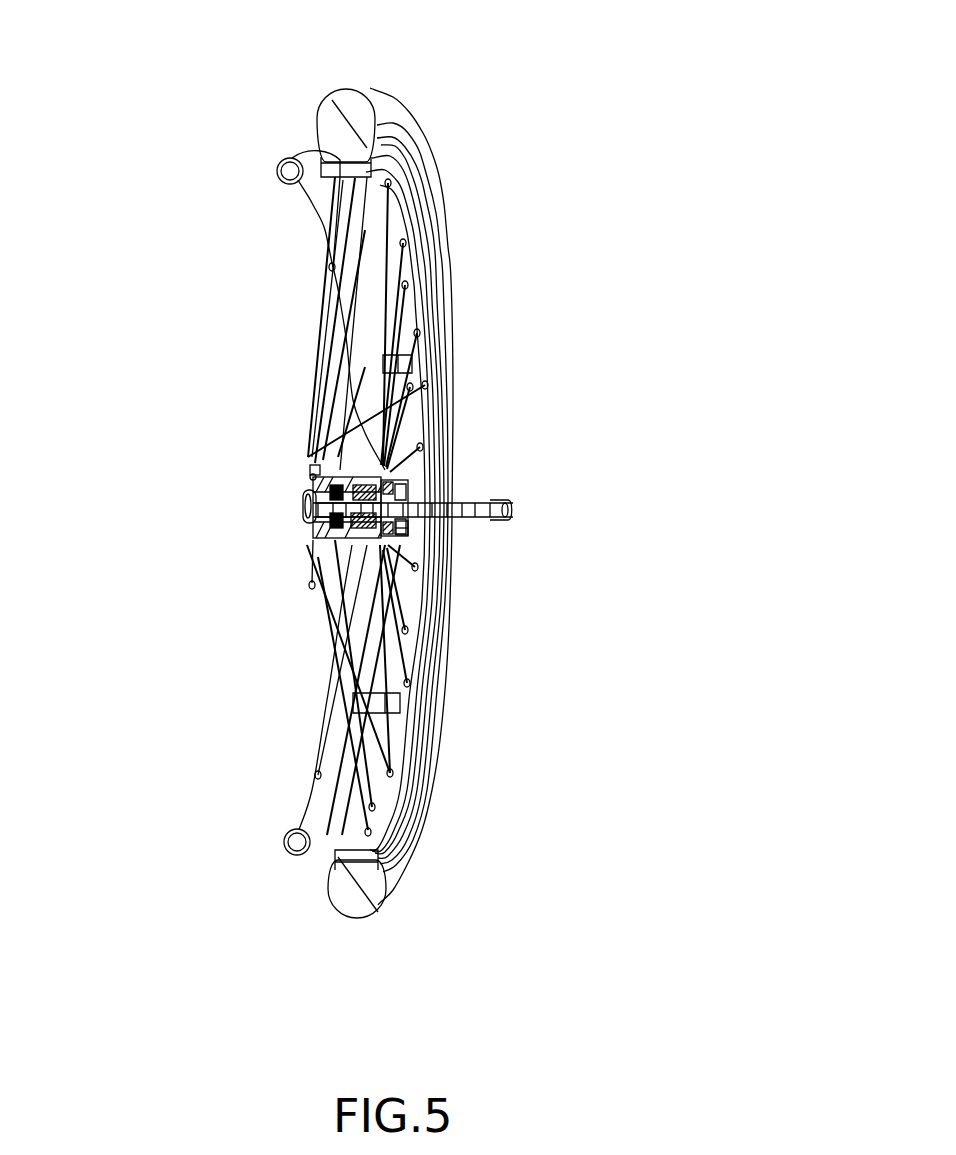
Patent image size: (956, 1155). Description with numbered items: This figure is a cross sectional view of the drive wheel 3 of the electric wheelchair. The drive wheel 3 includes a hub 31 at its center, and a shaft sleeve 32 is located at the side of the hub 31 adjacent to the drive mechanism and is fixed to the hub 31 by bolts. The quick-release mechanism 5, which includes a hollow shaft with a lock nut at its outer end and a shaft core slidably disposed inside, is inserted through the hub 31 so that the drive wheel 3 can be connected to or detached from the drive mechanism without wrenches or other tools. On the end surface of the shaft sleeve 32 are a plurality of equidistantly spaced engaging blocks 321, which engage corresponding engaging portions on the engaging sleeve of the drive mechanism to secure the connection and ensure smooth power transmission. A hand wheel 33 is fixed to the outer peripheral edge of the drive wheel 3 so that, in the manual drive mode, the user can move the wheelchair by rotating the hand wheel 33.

The drive wheel 3 is at (440, 183).
The quick-release mechanism 5 is at (475, 503).
The hub 31 is at (312, 477).
The shaft sleeve 32 is at (400, 548).
The engaging blocks 321 is at (402, 527).
The hand wheel 33 is at (287, 835).